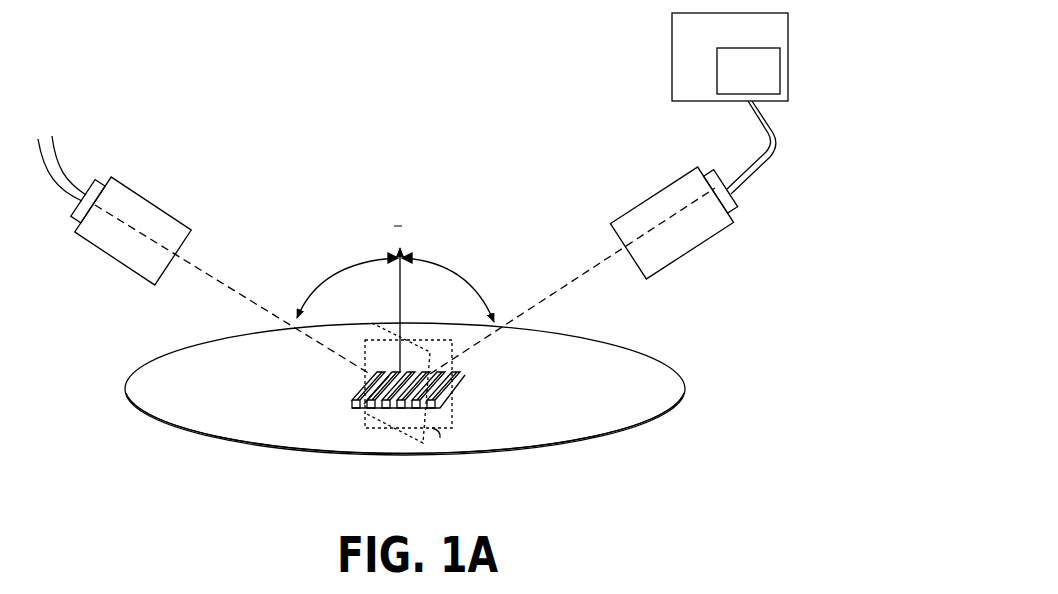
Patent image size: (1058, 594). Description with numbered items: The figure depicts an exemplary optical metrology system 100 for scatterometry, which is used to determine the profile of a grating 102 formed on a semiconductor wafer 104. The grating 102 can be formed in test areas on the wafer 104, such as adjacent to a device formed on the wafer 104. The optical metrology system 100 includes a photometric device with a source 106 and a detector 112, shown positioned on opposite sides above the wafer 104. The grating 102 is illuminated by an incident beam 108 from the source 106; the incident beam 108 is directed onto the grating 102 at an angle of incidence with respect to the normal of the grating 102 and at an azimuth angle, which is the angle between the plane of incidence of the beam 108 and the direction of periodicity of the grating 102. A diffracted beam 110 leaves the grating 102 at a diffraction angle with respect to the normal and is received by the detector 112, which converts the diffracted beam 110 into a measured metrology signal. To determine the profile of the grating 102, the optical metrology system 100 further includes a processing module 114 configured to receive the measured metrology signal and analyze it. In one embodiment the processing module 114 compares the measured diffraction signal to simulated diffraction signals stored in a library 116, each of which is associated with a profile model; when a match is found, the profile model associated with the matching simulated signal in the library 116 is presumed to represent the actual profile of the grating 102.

The optical metrology system 100 is at (160, 64).
The grating 102 is at (355, 422).
The semiconductor wafer 104 is at (173, 350).
The source 106 is at (141, 192).
The incident beam 108 is at (200, 266).
The diffracted beam 110 is at (570, 283).
The detector 112 is at (730, 230).
The processing module 114 is at (730, 57).
The library 116 is at (748, 71).